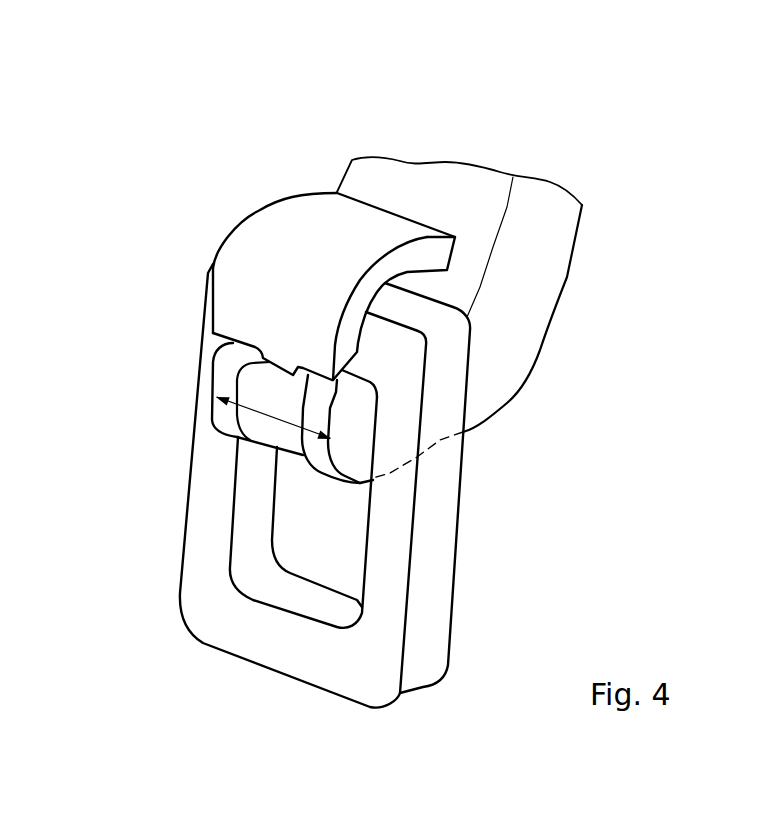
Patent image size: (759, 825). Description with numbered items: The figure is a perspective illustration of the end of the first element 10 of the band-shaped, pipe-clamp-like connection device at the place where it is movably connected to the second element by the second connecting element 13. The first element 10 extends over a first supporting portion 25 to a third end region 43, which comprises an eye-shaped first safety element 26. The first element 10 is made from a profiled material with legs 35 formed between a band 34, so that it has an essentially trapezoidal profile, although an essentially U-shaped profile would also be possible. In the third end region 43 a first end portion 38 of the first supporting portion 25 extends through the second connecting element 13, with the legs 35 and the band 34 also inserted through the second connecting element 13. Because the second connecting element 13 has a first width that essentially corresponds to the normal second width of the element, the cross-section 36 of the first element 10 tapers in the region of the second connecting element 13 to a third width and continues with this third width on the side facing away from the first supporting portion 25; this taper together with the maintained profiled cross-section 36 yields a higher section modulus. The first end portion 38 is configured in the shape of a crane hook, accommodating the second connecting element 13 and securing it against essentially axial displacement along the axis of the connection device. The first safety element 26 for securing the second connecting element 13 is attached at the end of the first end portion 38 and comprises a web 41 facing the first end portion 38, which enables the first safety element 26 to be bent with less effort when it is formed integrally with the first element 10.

The first element 10 is at (579, 270).
The second connecting element 13 is at (437, 553).
The first supporting portion 25 is at (463, 173).
The first safety element 26 is at (315, 213).
The band 34 is at (405, 173).
The legs 35 is at (567, 222).
The cross-section 36 is at (270, 418).
The first end portion 38 is at (223, 415).
The web 41 is at (277, 363).
The third end region 43 is at (205, 210).